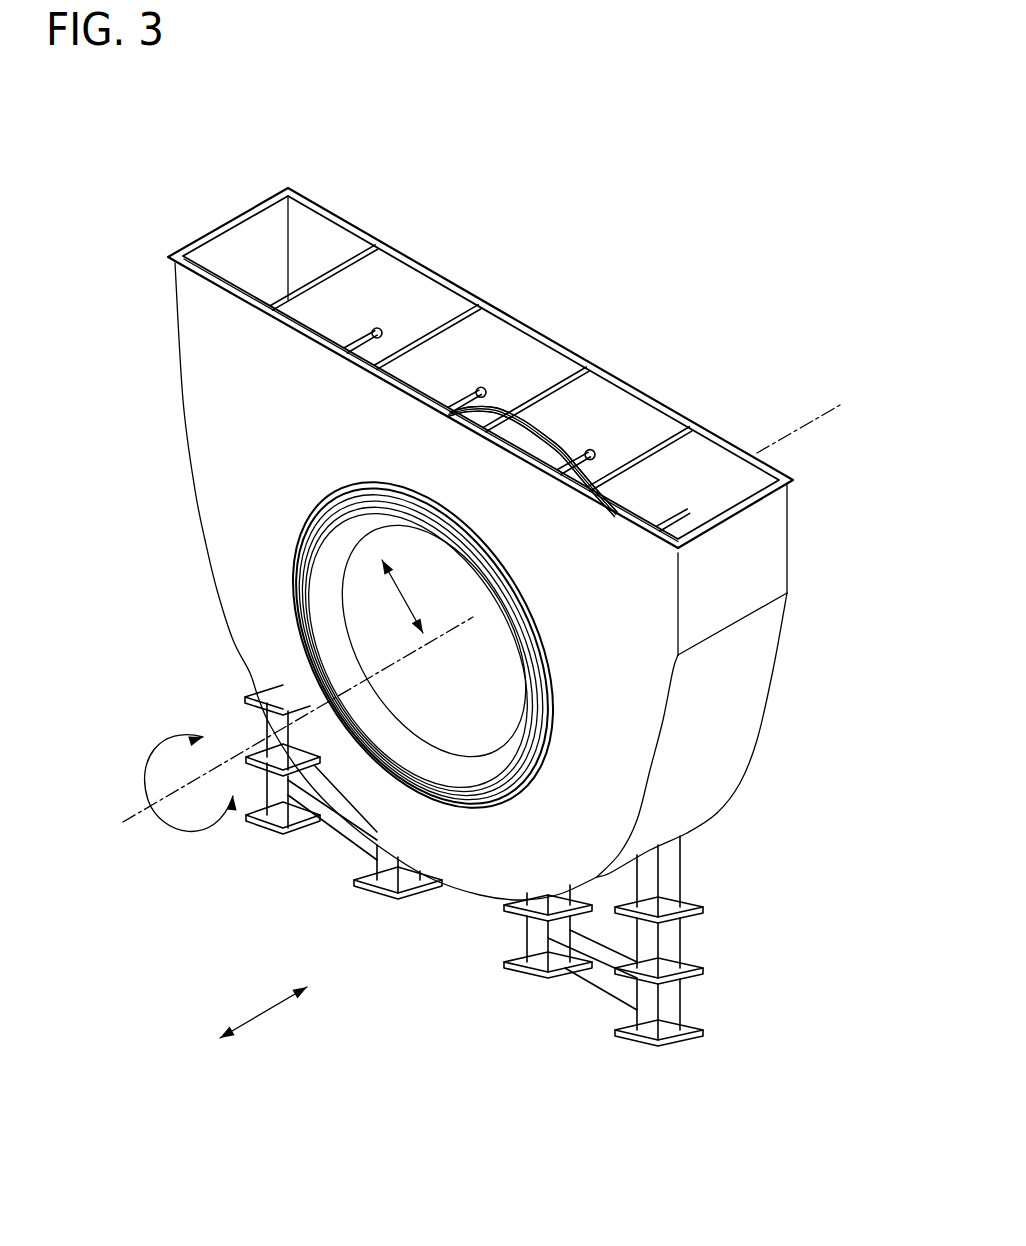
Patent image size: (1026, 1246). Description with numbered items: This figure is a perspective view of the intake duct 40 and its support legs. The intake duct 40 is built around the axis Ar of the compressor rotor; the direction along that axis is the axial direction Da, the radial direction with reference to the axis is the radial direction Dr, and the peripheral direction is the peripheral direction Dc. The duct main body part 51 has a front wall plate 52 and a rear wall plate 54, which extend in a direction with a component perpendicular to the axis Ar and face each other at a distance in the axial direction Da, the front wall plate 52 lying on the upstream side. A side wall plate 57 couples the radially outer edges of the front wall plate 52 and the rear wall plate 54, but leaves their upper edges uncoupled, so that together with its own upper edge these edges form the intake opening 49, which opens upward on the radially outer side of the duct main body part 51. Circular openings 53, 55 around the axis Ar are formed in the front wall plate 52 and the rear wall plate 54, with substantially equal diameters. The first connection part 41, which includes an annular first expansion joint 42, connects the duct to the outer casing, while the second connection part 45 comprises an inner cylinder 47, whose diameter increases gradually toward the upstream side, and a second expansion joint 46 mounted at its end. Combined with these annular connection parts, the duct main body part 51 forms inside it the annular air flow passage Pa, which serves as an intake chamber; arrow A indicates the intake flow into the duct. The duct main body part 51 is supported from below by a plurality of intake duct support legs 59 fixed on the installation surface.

The intake duct 40 is at (360, 195).
The intake opening 49 is at (240, 218).
The circular opening 55 is at (503, 413).
The first connection part 41 is at (560, 440).
The first expansion joint 42 is at (597, 404).
The air flow passage Pa is at (440, 367).
The flow direction A is at (535, 290).
The circular opening 53 is at (553, 745).
The duct main body part 51 is at (842, 668).
The rear wall plate 54 is at (780, 632).
The side wall plate 57 is at (732, 710).
The front wall plate 52 is at (627, 710).
The second connection part 45 is at (512, 1043).
The second expansion joint 46 is at (487, 812).
The inner cylinder 47 is at (470, 733).
The radial direction Dr is at (400, 596).
The axis Ar is at (135, 810).
The peripheral direction Dc is at (152, 725).
The intake duct support legs 59 is at (365, 852).
The axial direction Da is at (268, 1010).